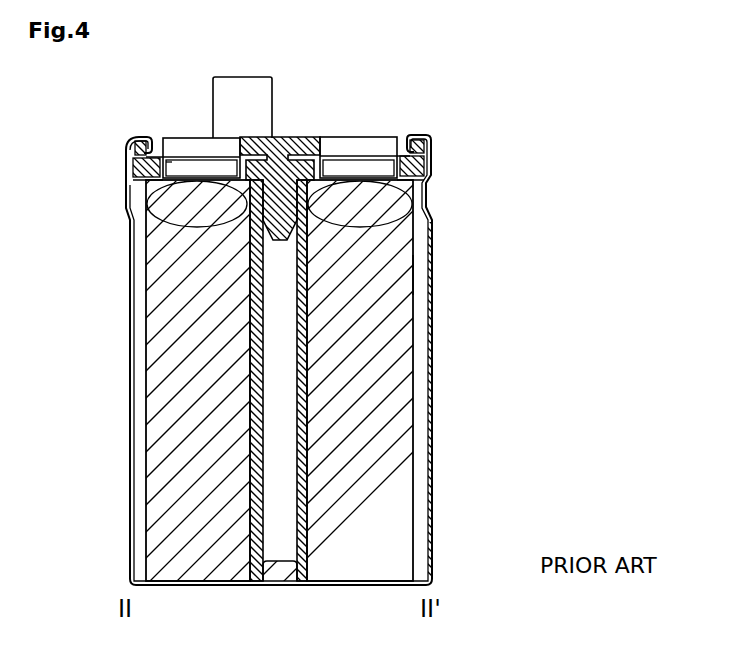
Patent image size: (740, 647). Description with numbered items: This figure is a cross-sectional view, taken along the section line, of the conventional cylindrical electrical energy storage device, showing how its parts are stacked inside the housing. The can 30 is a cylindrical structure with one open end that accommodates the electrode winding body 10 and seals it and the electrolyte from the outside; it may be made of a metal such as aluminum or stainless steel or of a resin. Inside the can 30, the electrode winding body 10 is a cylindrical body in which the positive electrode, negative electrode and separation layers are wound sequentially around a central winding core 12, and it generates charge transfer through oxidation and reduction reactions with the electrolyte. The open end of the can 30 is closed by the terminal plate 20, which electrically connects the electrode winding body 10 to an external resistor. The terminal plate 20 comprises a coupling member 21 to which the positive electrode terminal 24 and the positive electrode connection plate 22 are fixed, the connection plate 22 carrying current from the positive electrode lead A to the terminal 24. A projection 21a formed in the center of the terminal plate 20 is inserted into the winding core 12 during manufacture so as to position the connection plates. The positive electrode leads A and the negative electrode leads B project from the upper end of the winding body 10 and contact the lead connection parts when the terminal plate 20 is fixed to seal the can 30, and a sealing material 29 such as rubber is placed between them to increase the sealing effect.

The electrode winding body 10 is at (230, 380).
The winding core 12 is at (263, 508).
The terminal plate 20 is at (130, 216).
The coupling member 21 is at (372, 163).
The projection 21a is at (412, 275).
The positive electrode connection plate 22 is at (433, 168).
The positive electrode terminal 24 is at (258, 97).
The sealing material 29 is at (433, 147).
The can 30 is at (432, 240).
The positive electrode lead A is at (176, 165).
The negative electrode lead B is at (428, 221).